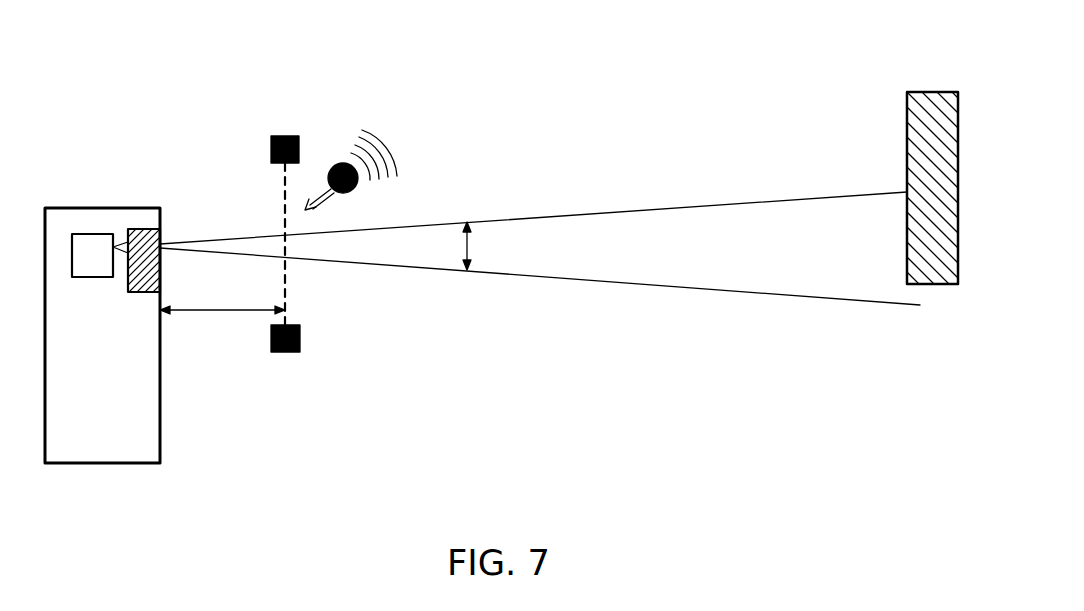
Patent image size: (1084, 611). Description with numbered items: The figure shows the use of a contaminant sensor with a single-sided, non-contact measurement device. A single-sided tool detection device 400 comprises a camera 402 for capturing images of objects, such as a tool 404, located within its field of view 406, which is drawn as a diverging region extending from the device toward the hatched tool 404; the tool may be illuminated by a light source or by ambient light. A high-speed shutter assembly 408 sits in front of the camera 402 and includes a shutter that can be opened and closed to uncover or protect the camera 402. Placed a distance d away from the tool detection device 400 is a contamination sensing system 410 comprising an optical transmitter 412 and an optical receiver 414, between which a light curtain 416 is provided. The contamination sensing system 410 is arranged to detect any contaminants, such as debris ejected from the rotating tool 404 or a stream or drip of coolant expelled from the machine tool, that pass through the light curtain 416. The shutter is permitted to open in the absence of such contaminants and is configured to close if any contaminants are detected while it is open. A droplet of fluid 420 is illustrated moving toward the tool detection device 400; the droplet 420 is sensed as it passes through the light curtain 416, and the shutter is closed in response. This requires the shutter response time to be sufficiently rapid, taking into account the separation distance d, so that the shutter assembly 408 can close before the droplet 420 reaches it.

The tool detection device 400 is at (92, 472).
The camera 402 is at (95, 262).
The tool 404 is at (907, 138).
The field of view 406 is at (540, 248).
The high-speed shutter assembly 408 is at (143, 228).
The contamination sensing system 410 is at (279, 129).
The optical transmitter 412 is at (316, 109).
The optical receiver 414 is at (286, 354).
The light curtain 416 is at (288, 289).
The droplet of fluid 420 is at (355, 192).